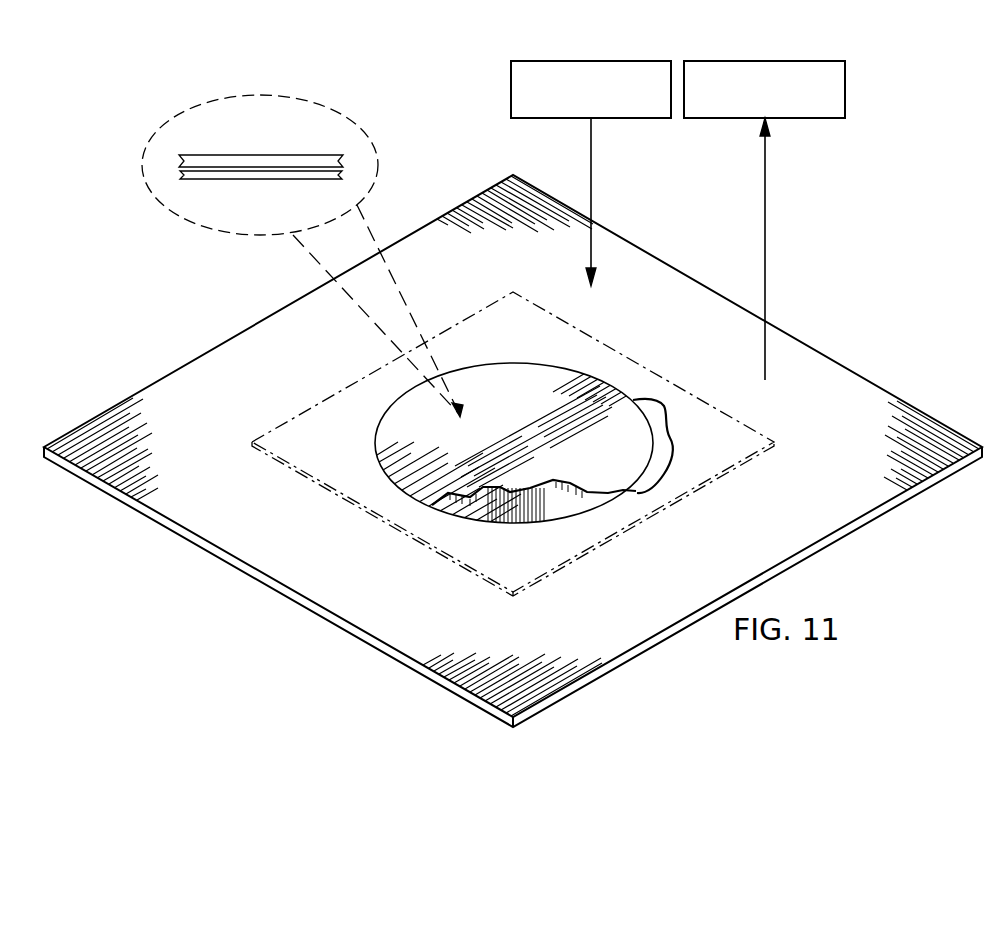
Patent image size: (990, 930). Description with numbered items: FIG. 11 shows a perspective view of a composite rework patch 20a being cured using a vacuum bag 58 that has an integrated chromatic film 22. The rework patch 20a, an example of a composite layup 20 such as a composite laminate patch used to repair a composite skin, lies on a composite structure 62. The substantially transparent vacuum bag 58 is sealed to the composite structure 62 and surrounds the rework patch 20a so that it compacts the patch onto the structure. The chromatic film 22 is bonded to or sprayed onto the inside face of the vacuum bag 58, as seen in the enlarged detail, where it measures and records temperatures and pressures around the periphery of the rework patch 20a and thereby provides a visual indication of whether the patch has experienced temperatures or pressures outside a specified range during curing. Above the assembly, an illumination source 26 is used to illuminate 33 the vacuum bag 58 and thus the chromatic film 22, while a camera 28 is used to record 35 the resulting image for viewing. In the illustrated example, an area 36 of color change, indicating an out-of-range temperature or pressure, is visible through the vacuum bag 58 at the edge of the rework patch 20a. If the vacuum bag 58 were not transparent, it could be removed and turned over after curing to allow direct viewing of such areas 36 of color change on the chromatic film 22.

The composite structure 20 is at (516, 362).
The composite rework patch 20a is at (575, 495).
The chromatic film 22 is at (291, 180).
The illumination source 26 is at (581, 61).
The camera 28 is at (774, 61).
The illuminate 33 is at (592, 166).
The record 35 is at (766, 222).
The area of color change 36 is at (674, 436).
The vacuum bag 58 is at (264, 159).
The composite structure 62 is at (816, 360).